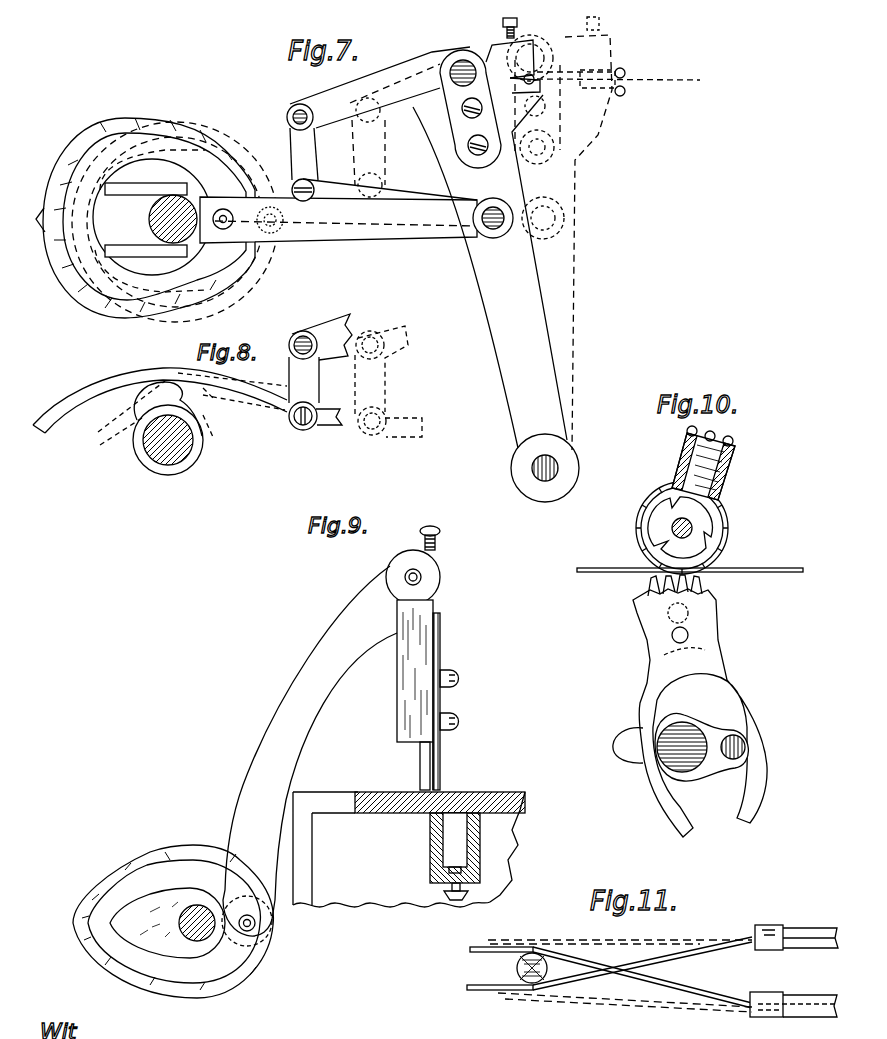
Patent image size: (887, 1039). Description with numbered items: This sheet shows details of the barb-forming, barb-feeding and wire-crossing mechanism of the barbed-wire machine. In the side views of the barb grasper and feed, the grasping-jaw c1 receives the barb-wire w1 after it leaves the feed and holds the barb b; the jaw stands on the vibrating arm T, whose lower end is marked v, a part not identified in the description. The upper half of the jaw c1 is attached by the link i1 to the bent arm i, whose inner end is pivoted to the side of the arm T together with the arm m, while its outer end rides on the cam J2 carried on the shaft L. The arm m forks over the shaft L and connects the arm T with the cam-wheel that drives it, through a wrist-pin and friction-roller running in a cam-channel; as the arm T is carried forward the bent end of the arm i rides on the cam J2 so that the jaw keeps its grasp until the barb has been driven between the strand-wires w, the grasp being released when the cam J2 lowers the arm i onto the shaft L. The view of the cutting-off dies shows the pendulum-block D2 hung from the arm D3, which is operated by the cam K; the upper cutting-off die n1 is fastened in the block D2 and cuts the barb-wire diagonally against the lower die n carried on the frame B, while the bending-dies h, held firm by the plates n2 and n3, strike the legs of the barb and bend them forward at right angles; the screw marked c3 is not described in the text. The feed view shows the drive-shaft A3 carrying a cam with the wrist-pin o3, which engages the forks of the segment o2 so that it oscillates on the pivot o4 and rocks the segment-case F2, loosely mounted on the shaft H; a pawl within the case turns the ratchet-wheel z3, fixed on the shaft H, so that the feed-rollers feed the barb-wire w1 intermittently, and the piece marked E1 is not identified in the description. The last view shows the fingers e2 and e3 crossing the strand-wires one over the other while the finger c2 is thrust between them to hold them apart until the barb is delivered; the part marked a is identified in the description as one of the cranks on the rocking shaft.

In FIG. 7, the cam K is at (145, 218).
In FIG. 9, the cam K is at (173, 921).
In FIG. 7, the cam J2 is at (181, 138).
In FIG. 8, the cam J2 is at (205, 432).
In FIG. 7, the shaft L is at (160, 232).
In FIG. 8, the shaft L is at (160, 444).
In FIG. 7, the arm m is at (356, 220).
In FIG. 7, the link i1 is at (304, 164).
In FIG. 8, the link i1 is at (355, 375).
In FIG. 7, the bent arm i is at (320, 188).
In FIG. 8, the bent arm i is at (141, 371).
In FIG. 7, the grasping-jaw c1 is at (413, 93).
In FIG. 7, the vibrating arm T is at (490, 271).
In FIG. 7, the pivot v is at (532, 469).
In FIG. 7, the barb b is at (535, 77).
In FIG. 7, the strand-wire w is at (626, 71).
In FIG. 11, the strand-wire w is at (599, 968).
In FIG. 9, the screw c3 is at (436, 542).
In FIG. 9, the pendulum-block D2 is at (441, 577).
In FIG. 9, the plate n3 is at (452, 672).
In FIG. 9, the plate n2 is at (453, 716).
In FIG. 9, the cutting-off die n1 is at (420, 765).
In FIG. 9, the bending-dies h is at (440, 775).
In FIG. 9, the cutting-off die n is at (473, 784).
In FIG. 9, the frame B is at (409, 849).
In FIG. 9, the arm D3 is at (310, 751).
In FIG. 10, the shaft H is at (694, 526).
In FIG. 10, the ratchet-wheel z3 is at (694, 546).
In FIG. 10, the segment-case F2 is at (722, 494).
In FIG. 10, the barb-wire w1 is at (690, 560).
In FIG. 10, the segment E' E1 is at (716, 617).
In FIG. 10, the pivot o4 is at (689, 636).
In FIG. 10, the forked segment o2 is at (676, 661).
In FIG. 10, the drive-shaft A3 is at (677, 755).
In FIG. 10, the wrist-pin o3 is at (726, 759).
In FIG. 11, the finger c2 is at (517, 959).
In FIG. 11, the crank a is at (642, 972).
In FIG. 11, the finger e2 is at (807, 933).
In FIG. 11, the finger e3 is at (803, 996).